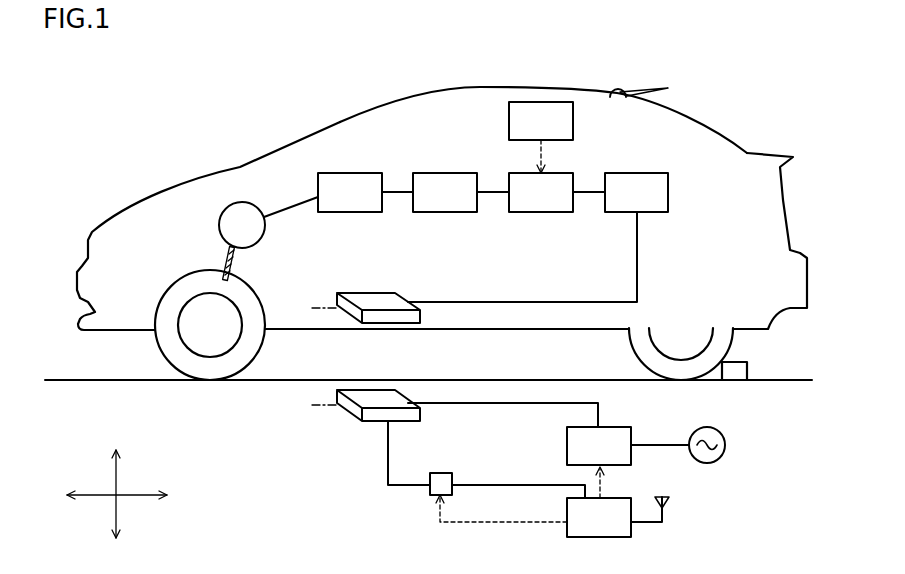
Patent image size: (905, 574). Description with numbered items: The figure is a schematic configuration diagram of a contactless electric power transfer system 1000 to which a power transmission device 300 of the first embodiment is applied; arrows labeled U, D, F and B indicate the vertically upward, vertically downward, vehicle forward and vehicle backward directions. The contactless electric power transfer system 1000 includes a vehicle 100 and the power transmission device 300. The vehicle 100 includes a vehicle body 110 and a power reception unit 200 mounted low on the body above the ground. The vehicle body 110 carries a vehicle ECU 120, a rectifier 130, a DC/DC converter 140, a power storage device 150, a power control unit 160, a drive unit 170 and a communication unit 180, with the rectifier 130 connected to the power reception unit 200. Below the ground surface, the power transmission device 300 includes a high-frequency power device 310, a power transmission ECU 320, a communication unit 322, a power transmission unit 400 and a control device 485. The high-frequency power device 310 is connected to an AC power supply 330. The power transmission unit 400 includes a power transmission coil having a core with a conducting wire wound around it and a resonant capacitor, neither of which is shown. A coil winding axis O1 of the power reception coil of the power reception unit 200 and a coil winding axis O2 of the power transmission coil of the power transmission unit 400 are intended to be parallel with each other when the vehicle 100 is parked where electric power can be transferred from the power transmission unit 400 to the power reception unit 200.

The contactless electric power transfer system 1000 is at (105, 55).
The vehicle 100 is at (276, 138).
The vehicle body 110 is at (480, 87).
The vehicle ECU 120 is at (575, 120).
The rectifier 130 is at (643, 173).
The DC/DC converter 140 is at (548, 173).
The power storage device 150 is at (453, 173).
The power control unit 160 is at (358, 173).
The drive unit 170 is at (250, 203).
The communication unit 180 is at (653, 85).
The power reception unit 200 is at (368, 291).
The coil winding axis of the power reception coil O1 is at (330, 309).
The coil winding axis of the power transmission coil O2 is at (320, 403).
The power transmission device 300 is at (519, 489).
The high-frequency power device 310 is at (617, 427).
The power transmission ECU 320 is at (617, 498).
The communication unit 322 is at (677, 512).
The AC power supply 330 is at (719, 431).
The power transmission unit 400 is at (373, 425).
The control device 485 is at (440, 473).